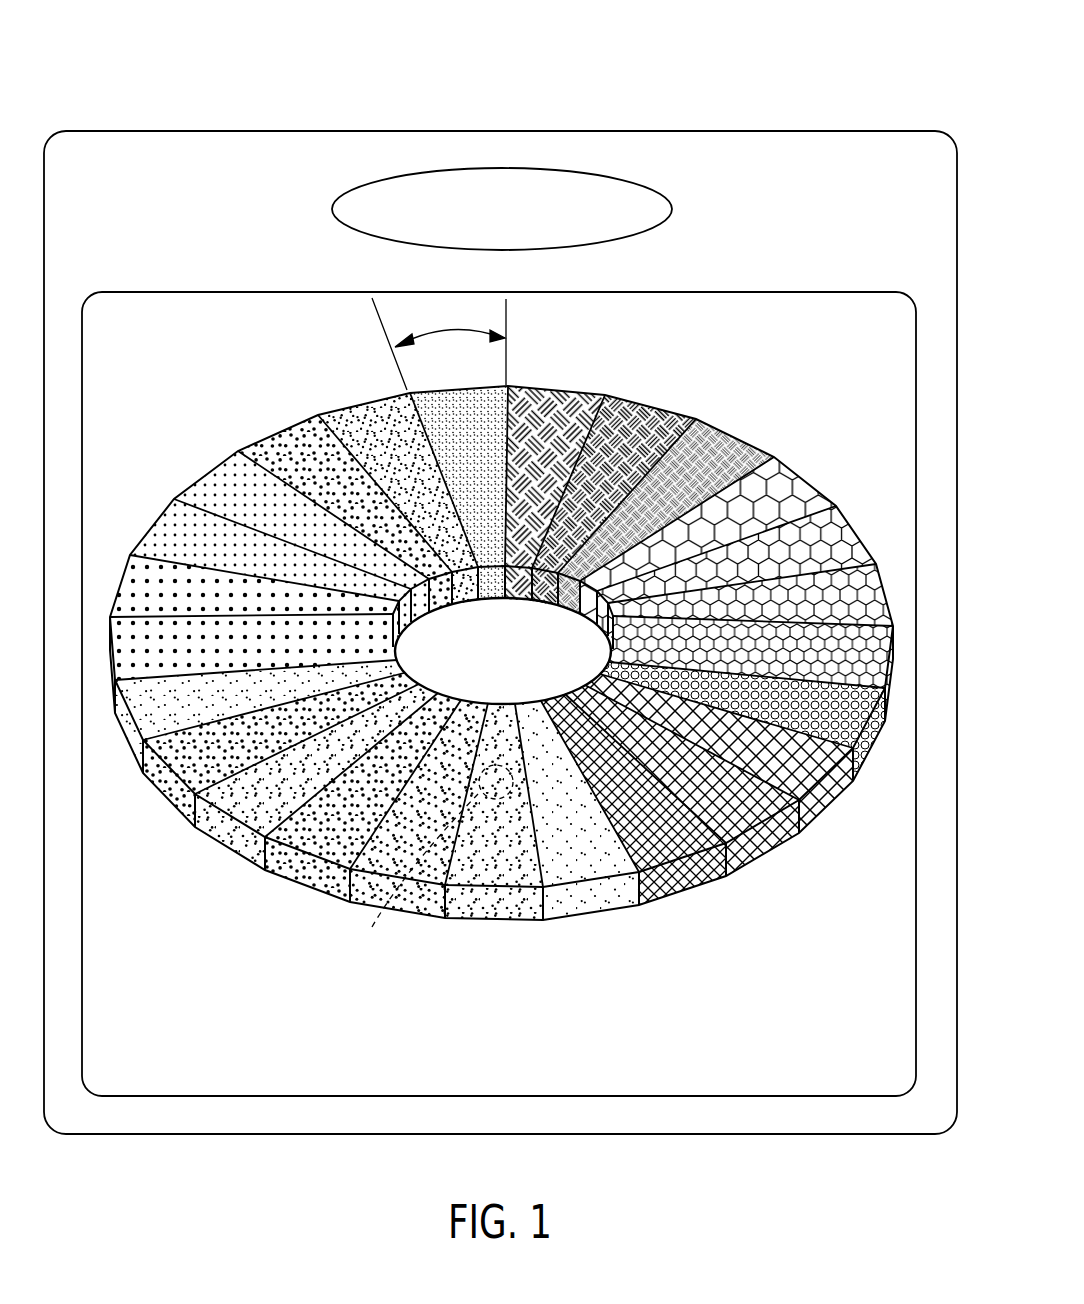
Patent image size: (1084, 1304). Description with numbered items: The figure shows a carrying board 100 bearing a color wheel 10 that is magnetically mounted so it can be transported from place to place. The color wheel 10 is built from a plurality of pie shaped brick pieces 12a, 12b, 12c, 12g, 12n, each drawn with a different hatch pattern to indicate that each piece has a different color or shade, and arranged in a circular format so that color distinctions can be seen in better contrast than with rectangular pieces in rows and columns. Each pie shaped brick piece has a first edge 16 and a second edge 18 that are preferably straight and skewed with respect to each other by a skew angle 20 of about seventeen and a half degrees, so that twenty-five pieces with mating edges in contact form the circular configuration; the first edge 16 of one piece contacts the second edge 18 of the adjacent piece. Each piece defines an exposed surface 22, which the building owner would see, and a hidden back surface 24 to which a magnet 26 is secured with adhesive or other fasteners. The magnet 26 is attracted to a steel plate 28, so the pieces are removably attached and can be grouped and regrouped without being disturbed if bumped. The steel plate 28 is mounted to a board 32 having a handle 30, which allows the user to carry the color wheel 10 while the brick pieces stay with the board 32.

The carrying board 100 is at (838, 72).
The board 32 is at (170, 150).
The handle 30 is at (420, 198).
The steel plate 28 is at (727, 292).
The color wheel 10 is at (200, 327).
The skew angle 20 is at (425, 332).
The pie shaped brick piece 12a is at (577, 407).
The pie shaped brick piece 12b is at (638, 422).
The pie shaped brick piece 12c is at (728, 445).
The pie shaped brick piece 12g is at (456, 408).
The pie shaped brick piece 12n is at (711, 512).
The first edge 16 is at (420, 427).
The second edge 18 is at (508, 420).
The exposed surface 22 is at (484, 848).
The back surface 24 is at (493, 925).
The magnet 26 is at (372, 926).